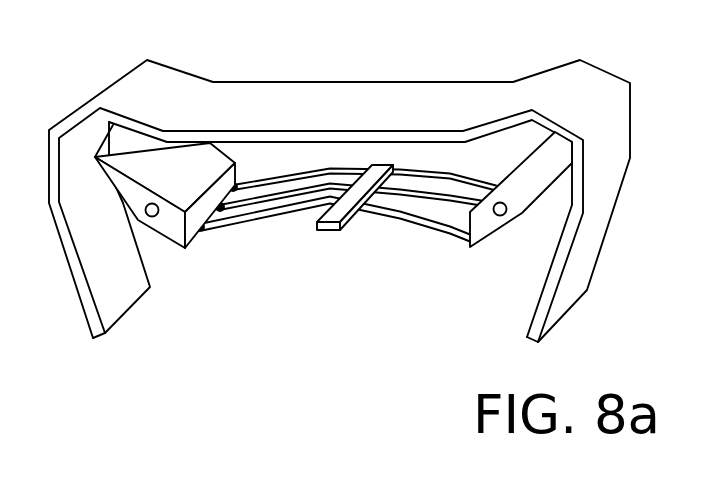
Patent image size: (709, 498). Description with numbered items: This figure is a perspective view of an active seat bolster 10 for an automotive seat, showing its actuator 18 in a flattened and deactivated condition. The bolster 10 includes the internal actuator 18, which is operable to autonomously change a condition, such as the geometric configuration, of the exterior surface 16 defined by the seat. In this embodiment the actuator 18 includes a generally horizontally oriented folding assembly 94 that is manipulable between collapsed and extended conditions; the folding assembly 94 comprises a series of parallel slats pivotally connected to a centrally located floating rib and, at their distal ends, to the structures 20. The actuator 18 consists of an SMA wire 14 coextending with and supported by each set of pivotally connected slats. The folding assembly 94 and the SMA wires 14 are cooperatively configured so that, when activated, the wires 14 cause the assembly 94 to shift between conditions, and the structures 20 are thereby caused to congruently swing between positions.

The active seat bolster 10 is at (111, 36).
The exterior surface 16 is at (245, 108).
The SMA wire 14 is at (235, 230).
The actuator 18 is at (315, 281).
The folding assembly 94 is at (403, 242).
The structures 20 is at (521, 218).